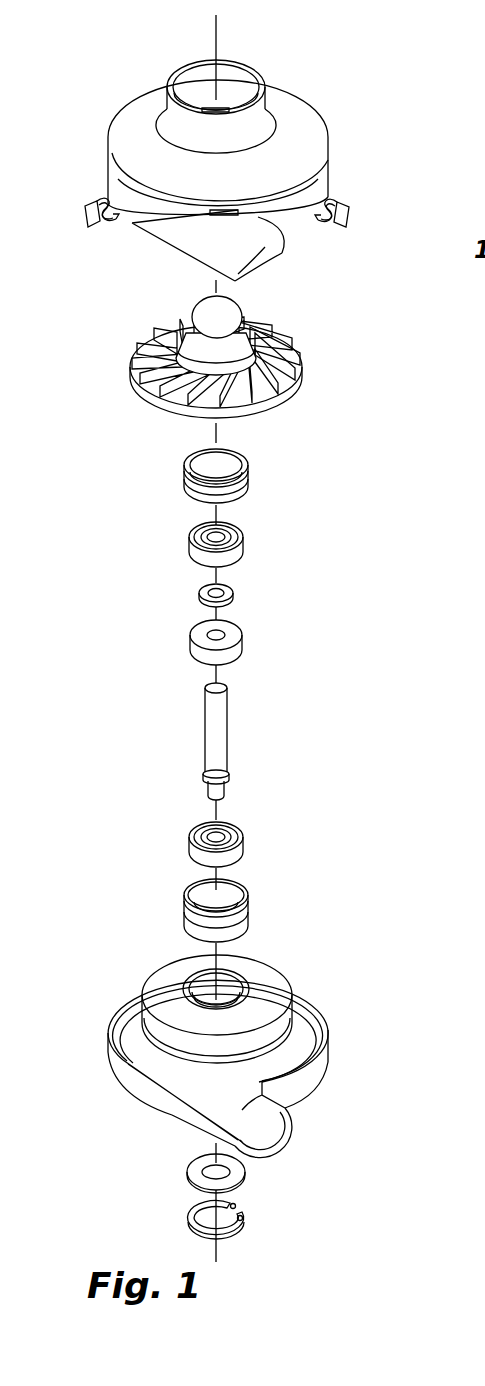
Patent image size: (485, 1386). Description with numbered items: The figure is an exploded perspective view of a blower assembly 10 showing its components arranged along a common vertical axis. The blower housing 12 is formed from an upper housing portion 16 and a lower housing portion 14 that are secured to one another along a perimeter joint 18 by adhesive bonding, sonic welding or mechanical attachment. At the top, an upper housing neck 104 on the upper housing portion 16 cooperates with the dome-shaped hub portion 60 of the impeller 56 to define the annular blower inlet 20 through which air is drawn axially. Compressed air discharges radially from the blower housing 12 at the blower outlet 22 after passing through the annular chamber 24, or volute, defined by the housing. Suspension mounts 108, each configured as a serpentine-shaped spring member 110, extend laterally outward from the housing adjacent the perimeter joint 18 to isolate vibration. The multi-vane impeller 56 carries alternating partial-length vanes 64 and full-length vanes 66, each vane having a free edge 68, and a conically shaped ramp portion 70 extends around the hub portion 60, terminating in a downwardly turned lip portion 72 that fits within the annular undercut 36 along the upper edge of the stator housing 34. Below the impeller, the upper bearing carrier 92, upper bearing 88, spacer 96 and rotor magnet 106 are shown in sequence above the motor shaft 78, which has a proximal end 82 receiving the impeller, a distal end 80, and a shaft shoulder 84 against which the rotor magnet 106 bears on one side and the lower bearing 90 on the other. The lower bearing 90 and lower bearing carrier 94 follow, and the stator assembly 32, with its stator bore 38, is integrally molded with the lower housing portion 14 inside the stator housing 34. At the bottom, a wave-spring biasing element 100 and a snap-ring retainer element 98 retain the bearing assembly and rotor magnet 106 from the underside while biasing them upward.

The blower assembly 10 is at (108, 58).
The blower housing 12 is at (225, 143).
The lower housing portion 14 is at (223, 1035).
The upper housing portion 16 is at (310, 100).
The perimeter joint 18 is at (327, 1035).
The blower inlet 20 is at (237, 77).
The blower outlet 22 is at (262, 253).
The annular chamber 24 is at (123, 1012).
The stator assembly 32 is at (267, 977).
The stator housing 34 is at (287, 1058).
The annular undercut 36 is at (297, 1007).
The stator bore 38 is at (192, 975).
The impeller 56 is at (211, 364).
The hub portion 60 is at (195, 315).
The partial-length vanes 64 is at (177, 395).
The full-length vanes 66 is at (170, 402).
The free edge 68 is at (137, 333).
The ramp portion 70 is at (265, 390).
The lip portion 72 is at (300, 378).
The motor shaft 78 is at (220, 740).
The distal end 80 is at (210, 797).
The proximal end 82 is at (210, 682).
The shaft shoulder 84 is at (228, 775).
The upper bearing 88 is at (243, 540).
The lower bearing 90 is at (242, 838).
The upper bearing carrier 92 is at (248, 473).
The lower bearing carrier 94 is at (248, 897).
The spacer 96 is at (228, 593).
The retainer element 98 is at (247, 1225).
The biasing element 100 is at (237, 1173).
The upper housing neck 104 is at (253, 95).
The rotor magnet 106 is at (233, 635).
The suspension mounts 108 is at (110, 230).
The spring member 110 is at (356, 173).